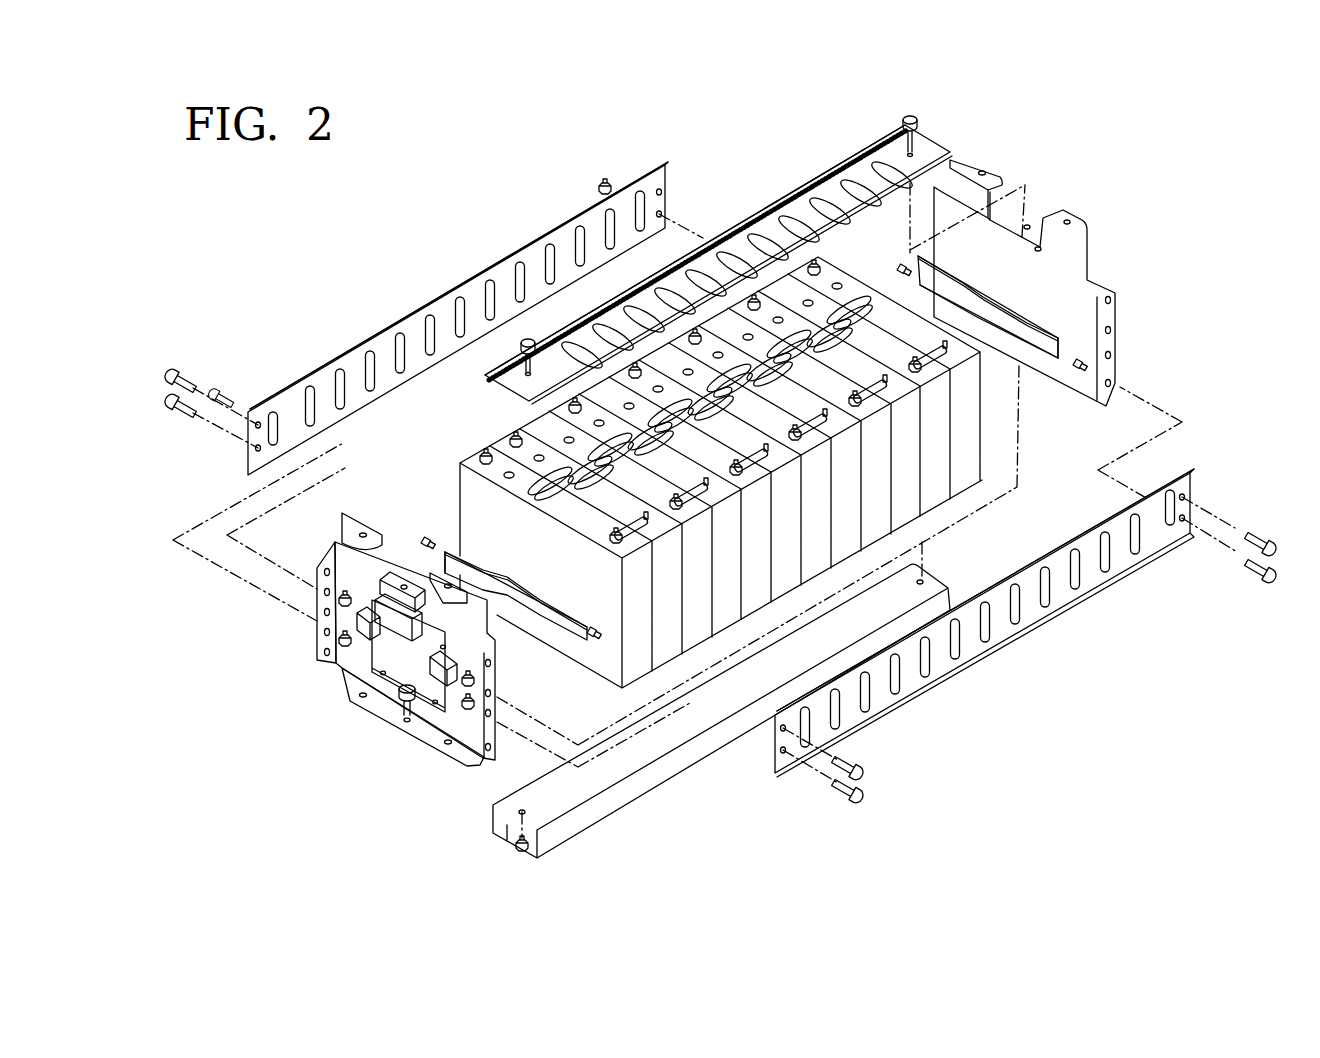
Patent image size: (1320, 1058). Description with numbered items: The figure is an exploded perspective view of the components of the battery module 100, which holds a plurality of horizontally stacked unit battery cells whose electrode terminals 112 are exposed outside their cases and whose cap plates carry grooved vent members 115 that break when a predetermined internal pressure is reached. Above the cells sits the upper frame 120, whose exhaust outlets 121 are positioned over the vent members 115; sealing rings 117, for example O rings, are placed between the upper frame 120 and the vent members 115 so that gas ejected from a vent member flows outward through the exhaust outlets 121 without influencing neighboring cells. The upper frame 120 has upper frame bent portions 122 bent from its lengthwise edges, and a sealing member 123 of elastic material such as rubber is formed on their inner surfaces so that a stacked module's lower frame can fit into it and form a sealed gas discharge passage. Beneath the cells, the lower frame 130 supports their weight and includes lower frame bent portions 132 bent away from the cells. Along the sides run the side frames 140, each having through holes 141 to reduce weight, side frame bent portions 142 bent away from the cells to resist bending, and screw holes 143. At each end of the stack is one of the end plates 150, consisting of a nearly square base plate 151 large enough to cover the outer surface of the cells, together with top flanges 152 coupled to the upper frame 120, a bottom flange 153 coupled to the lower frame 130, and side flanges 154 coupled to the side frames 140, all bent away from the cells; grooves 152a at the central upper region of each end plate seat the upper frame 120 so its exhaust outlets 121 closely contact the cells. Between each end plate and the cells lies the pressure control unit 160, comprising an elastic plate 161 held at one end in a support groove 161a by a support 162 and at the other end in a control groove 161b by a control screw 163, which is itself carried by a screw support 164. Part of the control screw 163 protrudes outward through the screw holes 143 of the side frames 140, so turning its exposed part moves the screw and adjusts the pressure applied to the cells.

The battery module 100 is at (1171, 153).
The electrode terminals 112 is at (507, 447).
The vent member 115 is at (573, 505).
The sealing rings 117 is at (547, 497).
The upper frame 120 is at (774, 204).
The exhaust outlets 121 is at (817, 203).
The upper frame bent portions 122 is at (740, 215).
The sealing member 123 is at (848, 168).
The lower frame 130 is at (661, 789).
The lower frame bent portions 132 is at (615, 807).
The side frames 140 is at (386, 326).
The through holes 141 is at (463, 300).
The side frame bent portions 142 is at (510, 255).
The screw holes 143 is at (272, 415).
The end plates 150 is at (332, 678).
The base plate 151 is at (387, 690).
The top flanges 152 is at (392, 560).
The grooves 152a is at (398, 572).
The bottom flange 153 is at (393, 717).
The side flanges 154 is at (327, 618).
The pressure control unit 160 is at (524, 581).
The elastic plate 161 is at (1045, 338).
The support groove 161a is at (588, 645).
The control groove 161b is at (450, 550).
The support 162 is at (902, 266).
The control screw 163 is at (428, 538).
The screw support 164 is at (1077, 372).